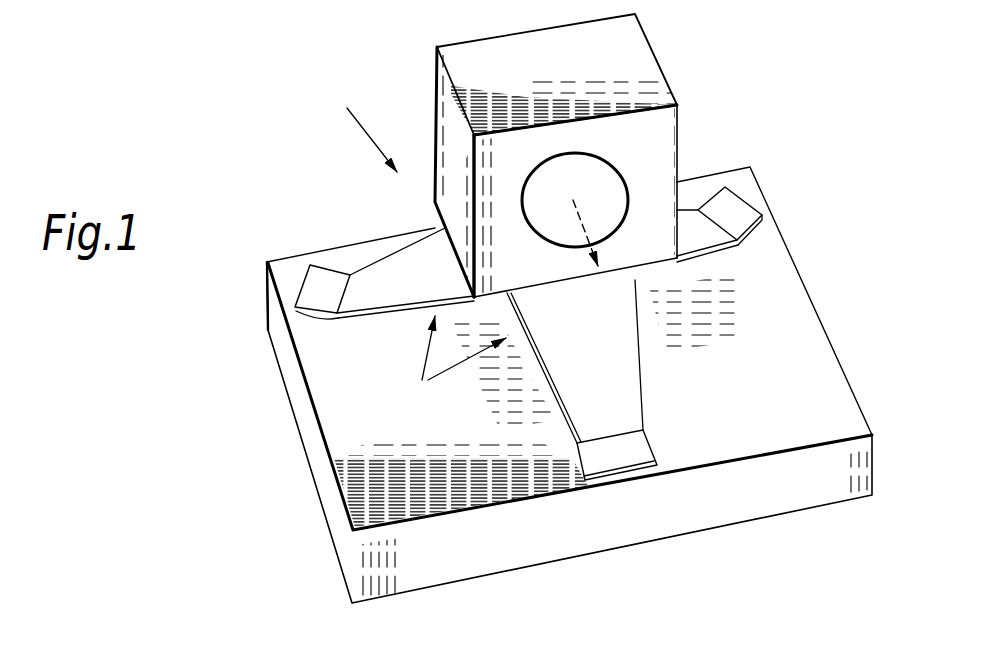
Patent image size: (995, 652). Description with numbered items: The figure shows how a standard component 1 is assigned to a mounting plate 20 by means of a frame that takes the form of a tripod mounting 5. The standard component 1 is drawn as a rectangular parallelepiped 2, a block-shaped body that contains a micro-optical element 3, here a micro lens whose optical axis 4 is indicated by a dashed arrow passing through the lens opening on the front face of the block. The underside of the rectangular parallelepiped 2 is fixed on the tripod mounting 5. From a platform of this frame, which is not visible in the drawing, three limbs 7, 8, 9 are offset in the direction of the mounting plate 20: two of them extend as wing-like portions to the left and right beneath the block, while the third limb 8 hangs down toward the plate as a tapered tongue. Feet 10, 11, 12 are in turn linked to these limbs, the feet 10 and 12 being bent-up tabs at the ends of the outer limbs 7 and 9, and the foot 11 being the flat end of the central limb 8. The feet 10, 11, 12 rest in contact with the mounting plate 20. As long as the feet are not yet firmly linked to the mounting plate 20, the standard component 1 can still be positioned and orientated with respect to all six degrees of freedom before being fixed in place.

The standard component 1 is at (364, 125).
The rectangular parallelepiped 2 is at (645, 54).
The micro-optical element 3 is at (597, 163).
The optical axis 4 is at (582, 222).
The tripod mounting 5 is at (458, 365).
The limb 7 is at (388, 298).
The limb 8 is at (632, 400).
The limb 9 is at (705, 243).
The foot 10 is at (315, 302).
The foot 11 is at (643, 450).
The foot 12 is at (742, 212).
The mounting plate 20 is at (692, 525).